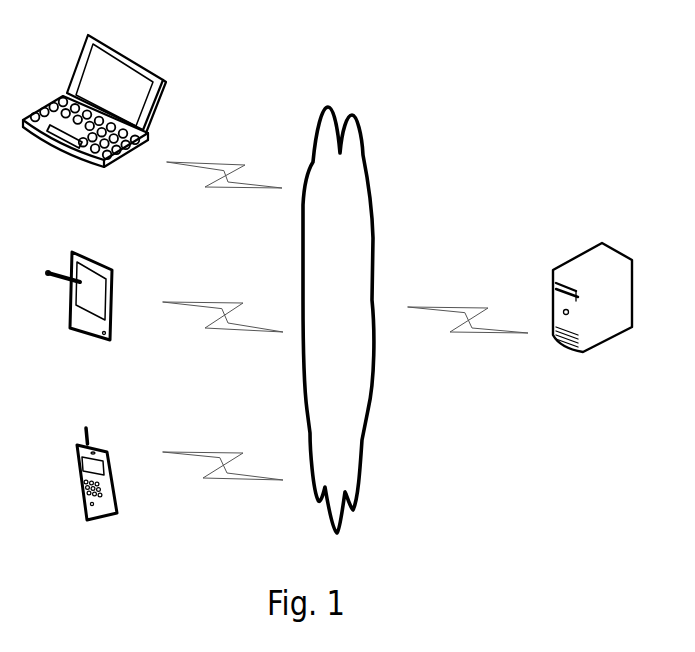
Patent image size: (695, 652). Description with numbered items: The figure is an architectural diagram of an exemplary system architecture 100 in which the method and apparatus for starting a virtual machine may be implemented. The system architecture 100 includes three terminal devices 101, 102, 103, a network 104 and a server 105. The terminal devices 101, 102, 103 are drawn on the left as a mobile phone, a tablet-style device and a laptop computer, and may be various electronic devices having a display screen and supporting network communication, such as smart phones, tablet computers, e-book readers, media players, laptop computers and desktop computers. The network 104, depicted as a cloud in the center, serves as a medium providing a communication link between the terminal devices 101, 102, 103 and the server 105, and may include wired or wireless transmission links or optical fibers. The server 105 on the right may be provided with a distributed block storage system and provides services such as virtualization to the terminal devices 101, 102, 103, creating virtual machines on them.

The system architecture 100 is at (554, 26).
The terminal device 101 is at (97, 490).
The terminal device 102 is at (79, 313).
The terminal device 103 is at (94, 120).
The network 104 is at (338, 320).
The server 105 is at (592, 316).